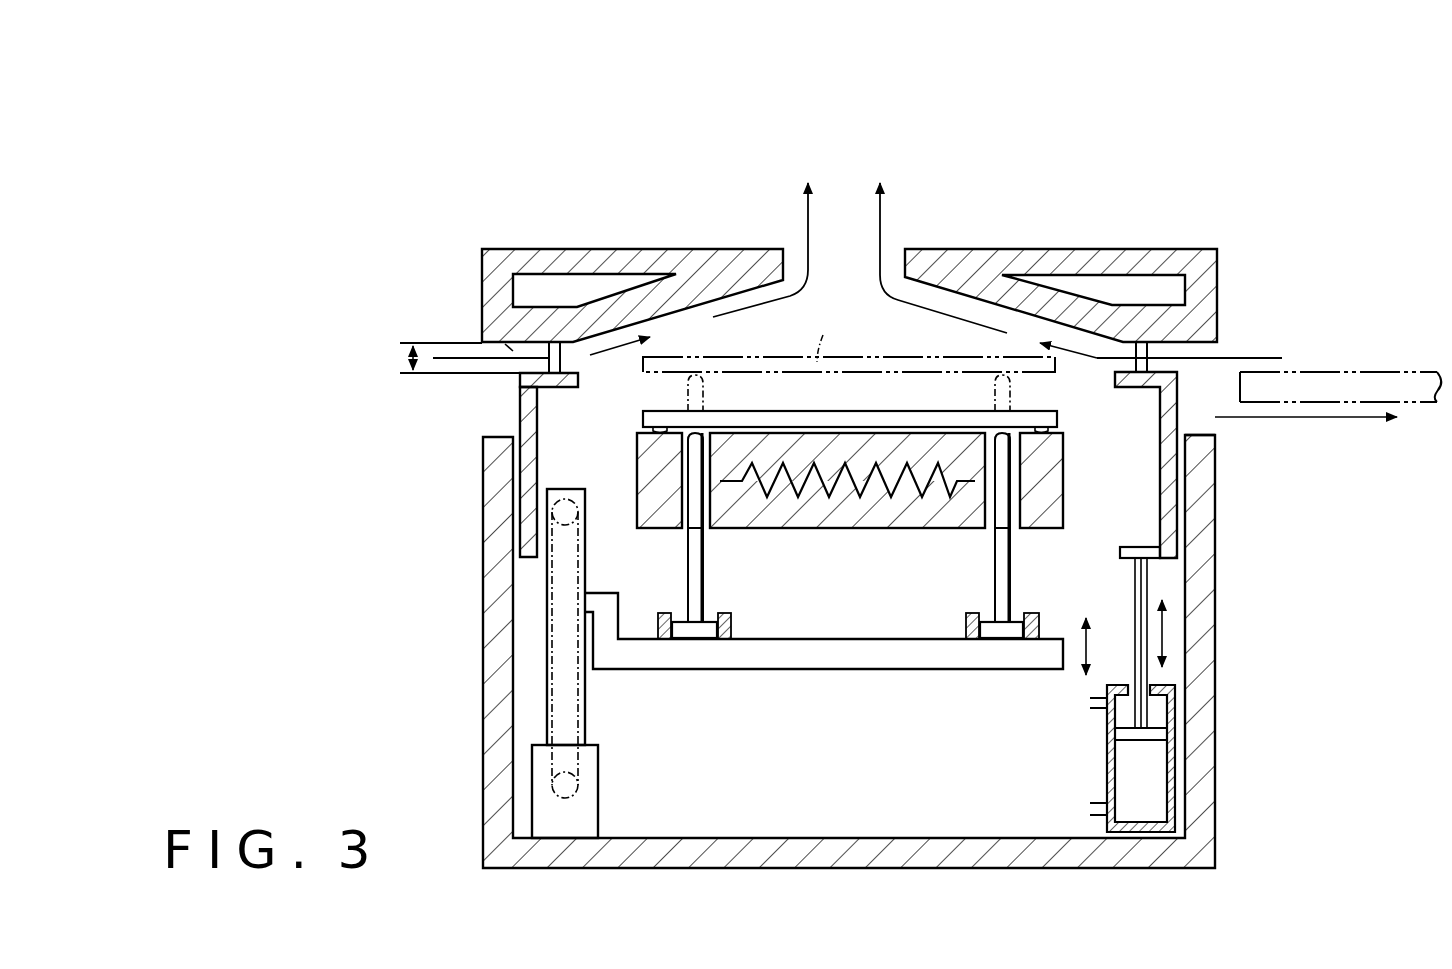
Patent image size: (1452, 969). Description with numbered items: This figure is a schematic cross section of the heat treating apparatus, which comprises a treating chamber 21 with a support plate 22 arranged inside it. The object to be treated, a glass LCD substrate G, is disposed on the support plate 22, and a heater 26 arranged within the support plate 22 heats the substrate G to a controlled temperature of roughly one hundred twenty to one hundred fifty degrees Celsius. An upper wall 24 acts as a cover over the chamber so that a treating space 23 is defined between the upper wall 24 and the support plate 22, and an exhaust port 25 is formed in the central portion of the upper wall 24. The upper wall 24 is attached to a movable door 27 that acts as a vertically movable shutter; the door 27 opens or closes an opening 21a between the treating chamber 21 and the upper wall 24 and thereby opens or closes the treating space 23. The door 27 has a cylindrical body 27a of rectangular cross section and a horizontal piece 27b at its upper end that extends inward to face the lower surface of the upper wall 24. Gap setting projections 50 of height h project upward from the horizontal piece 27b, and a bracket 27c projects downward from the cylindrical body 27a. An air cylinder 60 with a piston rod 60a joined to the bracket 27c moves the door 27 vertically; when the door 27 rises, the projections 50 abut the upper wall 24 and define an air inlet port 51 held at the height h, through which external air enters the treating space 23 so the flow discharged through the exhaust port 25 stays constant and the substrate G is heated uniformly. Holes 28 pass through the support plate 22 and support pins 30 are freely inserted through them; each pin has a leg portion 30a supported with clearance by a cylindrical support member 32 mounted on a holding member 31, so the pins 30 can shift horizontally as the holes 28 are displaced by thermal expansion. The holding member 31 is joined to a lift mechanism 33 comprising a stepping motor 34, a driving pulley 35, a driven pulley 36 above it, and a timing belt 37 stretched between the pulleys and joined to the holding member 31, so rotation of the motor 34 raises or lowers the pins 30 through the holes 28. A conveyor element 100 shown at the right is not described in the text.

The treating chamber 21 is at (1215, 755).
The opening 21a is at (1200, 435).
The support plate 22 is at (1043, 480).
The treating space 23 is at (758, 317).
The upper wall 24 is at (1180, 255).
The exhaust port 25 is at (845, 260).
The heater 26 is at (823, 492).
The movable door 27 is at (1178, 497).
The cylindrical body 27a is at (527, 482).
The horizontal piece 27b is at (563, 387).
The bracket 27c is at (1153, 560).
The holes 28 is at (698, 507).
The support pins 30 is at (705, 583).
The leg portion 30a is at (690, 628).
The holding member 31 is at (872, 658).
The support member 32 is at (662, 613).
The lift mechanism 33 is at (542, 673).
The stepping motor 34 is at (598, 772).
The driving pulley 35 is at (565, 800).
The driven pulley 36 is at (583, 540).
The timing belt 37 is at (550, 757).
The gap setting projections 50 is at (553, 343).
The air inlet port 51 is at (482, 310).
The air cylinder 60 is at (1107, 758).
The piston rod 60a is at (1140, 705).
The conveyor plate 100 is at (1433, 407).
The substrate G is at (837, 410).
The height h is at (461, 357).